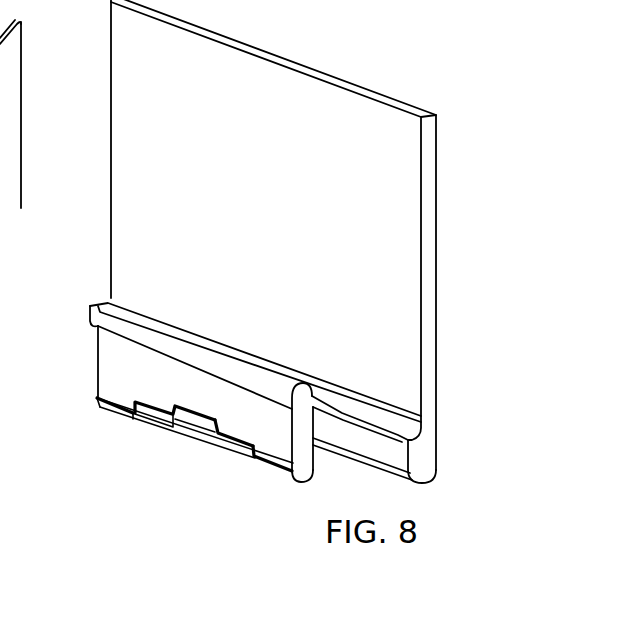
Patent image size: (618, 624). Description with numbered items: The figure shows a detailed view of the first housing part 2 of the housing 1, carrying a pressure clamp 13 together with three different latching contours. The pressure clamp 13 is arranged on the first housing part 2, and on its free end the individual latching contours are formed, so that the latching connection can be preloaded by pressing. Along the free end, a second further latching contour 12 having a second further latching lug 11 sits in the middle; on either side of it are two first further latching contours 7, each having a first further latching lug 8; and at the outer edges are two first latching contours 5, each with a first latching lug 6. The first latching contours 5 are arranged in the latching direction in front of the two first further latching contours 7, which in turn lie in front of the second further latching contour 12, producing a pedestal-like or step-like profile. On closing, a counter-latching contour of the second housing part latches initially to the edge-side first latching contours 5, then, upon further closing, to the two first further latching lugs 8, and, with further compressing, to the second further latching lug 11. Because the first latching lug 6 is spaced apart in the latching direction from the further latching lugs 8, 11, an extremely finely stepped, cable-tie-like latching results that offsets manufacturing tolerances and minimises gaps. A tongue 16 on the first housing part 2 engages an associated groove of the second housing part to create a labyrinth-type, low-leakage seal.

The housing 1 is at (413, 0).
The first housing part 2 is at (263, 236).
The first latching contour 5 is at (115, 421).
The first latching lug 6 is at (102, 404).
The first further latching contour 7 is at (152, 432).
The first further latching lug 8 is at (150, 407).
The second further latching lug 11 is at (200, 420).
The second further latching contour 12 is at (187, 446).
The pressure clamp 13 is at (130, 338).
The tongue 16 is at (420, 467).